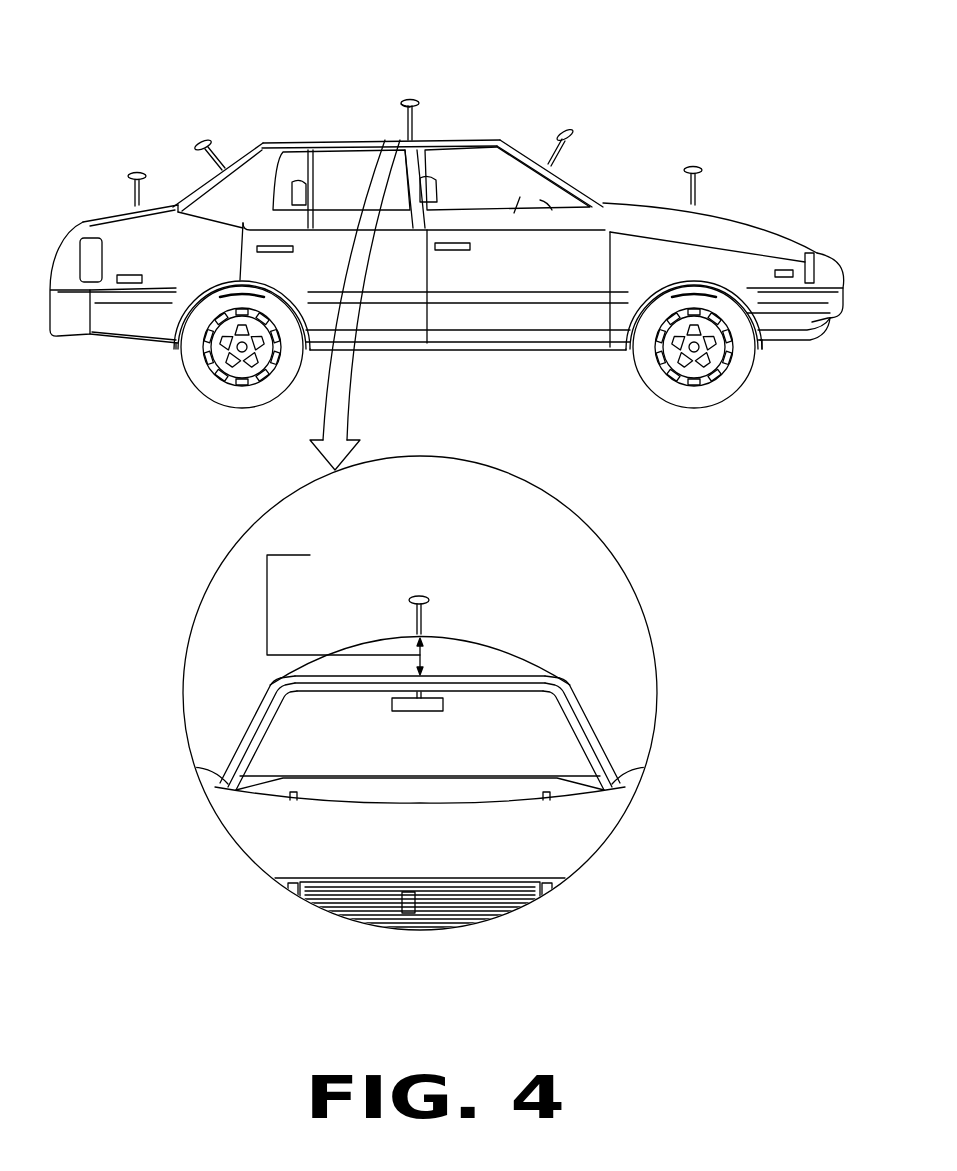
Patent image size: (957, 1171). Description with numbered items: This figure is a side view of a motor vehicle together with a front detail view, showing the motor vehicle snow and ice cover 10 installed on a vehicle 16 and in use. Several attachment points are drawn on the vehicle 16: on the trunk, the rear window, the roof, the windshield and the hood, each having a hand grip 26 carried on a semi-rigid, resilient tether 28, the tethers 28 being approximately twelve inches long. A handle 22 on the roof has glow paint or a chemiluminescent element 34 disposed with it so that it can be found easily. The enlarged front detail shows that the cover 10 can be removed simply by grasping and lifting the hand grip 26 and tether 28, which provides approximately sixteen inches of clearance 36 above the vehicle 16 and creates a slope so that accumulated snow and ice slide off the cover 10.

The motor vehicle snow and ice cover 10 is at (768, 100).
The vehicle 16 is at (437, 351).
The handle 22 is at (410, 100).
The hand grip 26 is at (420, 101).
The tether 28 is at (413, 120).
The chemiluminescent element 34 is at (397, 99).
The clearance 36 is at (267, 613).